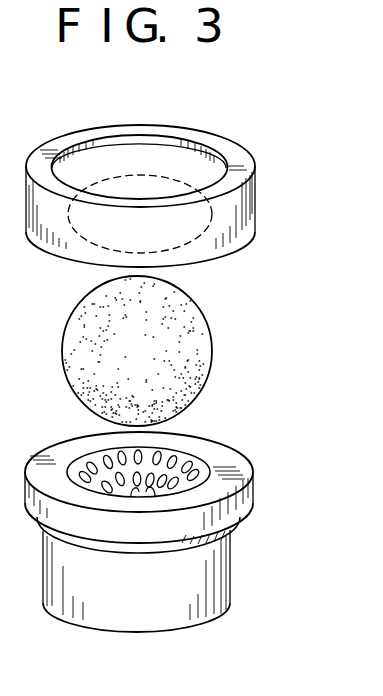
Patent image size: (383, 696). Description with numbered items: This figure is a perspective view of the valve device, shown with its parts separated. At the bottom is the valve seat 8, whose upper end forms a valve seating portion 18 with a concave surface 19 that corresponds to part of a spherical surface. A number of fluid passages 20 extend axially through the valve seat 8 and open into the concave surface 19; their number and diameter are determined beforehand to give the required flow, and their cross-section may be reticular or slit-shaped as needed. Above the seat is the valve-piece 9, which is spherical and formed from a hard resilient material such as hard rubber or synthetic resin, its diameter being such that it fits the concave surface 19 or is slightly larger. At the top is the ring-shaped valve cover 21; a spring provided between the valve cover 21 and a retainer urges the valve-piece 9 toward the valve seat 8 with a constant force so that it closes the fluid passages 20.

The valve seat 8 is at (229, 560).
The valve-piece 9 is at (211, 343).
The valve seating portion 18 is at (208, 470).
The concave surface 19 is at (188, 461).
The fluid passages 20 is at (92, 468).
The valve cover 21 is at (242, 243).